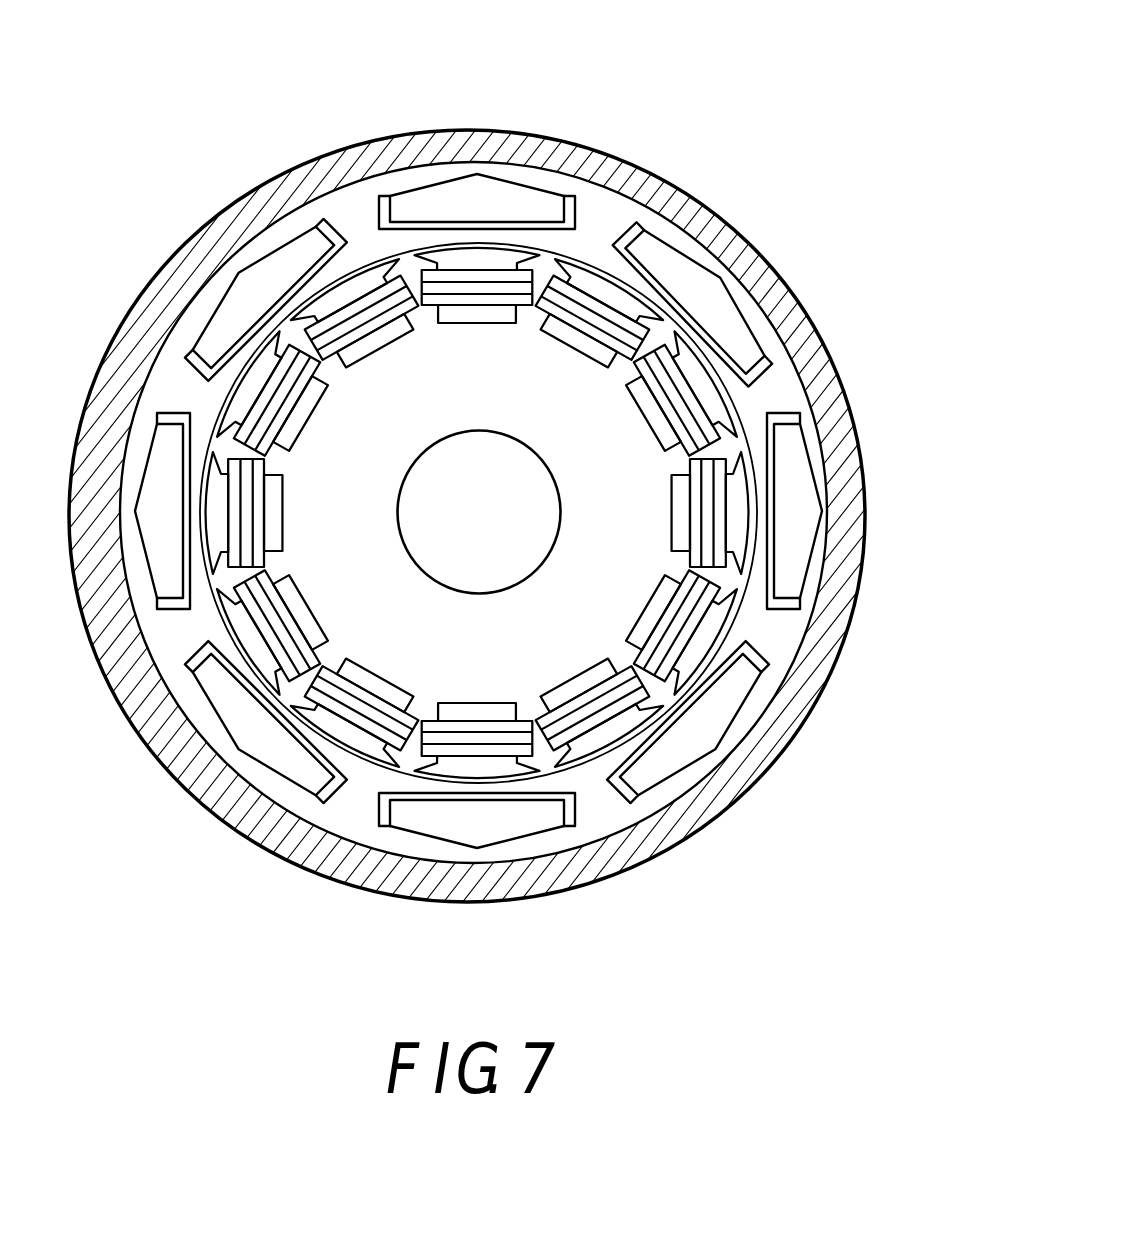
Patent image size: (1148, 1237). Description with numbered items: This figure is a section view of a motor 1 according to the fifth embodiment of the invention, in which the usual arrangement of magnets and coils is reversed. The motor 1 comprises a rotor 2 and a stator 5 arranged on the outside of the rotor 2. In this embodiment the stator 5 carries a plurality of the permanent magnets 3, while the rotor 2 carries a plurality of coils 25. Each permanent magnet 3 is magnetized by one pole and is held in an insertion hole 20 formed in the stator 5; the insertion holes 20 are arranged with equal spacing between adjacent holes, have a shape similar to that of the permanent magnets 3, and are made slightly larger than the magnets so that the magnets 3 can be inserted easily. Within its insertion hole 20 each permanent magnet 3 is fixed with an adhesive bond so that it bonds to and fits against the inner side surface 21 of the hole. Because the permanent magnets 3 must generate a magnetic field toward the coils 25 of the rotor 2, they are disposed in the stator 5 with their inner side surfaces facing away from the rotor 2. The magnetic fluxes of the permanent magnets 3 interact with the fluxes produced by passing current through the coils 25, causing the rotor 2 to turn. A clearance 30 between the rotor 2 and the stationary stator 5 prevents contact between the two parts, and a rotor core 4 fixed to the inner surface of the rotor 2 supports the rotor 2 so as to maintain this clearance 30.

The motor 1 is at (645, 133).
The rotor 2 is at (661, 524).
The permanent magnet 3 is at (478, 463).
The rotor core 4 is at (538, 515).
The stator 5 is at (793, 390).
The insertion hole 20 is at (580, 215).
The inner side surface 21 is at (522, 178).
The coil 25 is at (620, 313).
The clearance 30 is at (752, 492).